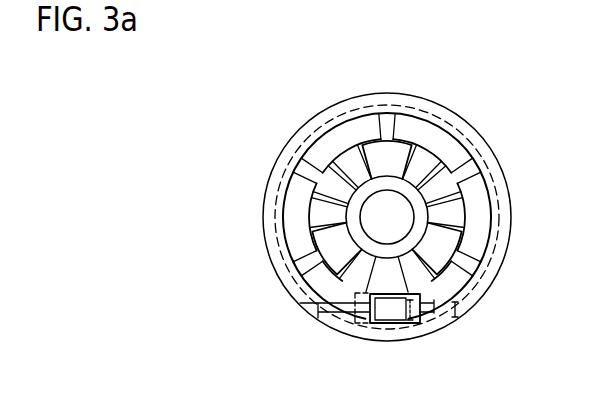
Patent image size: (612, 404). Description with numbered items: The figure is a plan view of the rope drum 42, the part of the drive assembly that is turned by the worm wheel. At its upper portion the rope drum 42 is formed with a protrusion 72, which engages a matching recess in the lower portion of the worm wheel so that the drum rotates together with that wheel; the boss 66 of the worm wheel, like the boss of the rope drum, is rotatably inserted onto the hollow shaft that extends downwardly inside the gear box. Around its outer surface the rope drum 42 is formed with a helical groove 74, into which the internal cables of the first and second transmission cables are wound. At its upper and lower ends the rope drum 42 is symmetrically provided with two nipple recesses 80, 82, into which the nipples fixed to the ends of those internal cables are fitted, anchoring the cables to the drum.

The rope drum 42 is at (463, 110).
The boss of the worm wheel 66 is at (400, 220).
The protrusion 72 is at (383, 152).
The helical groove 74 is at (303, 138).
The nipple recess 80 is at (392, 320).
The nipple recess 82 is at (357, 332).